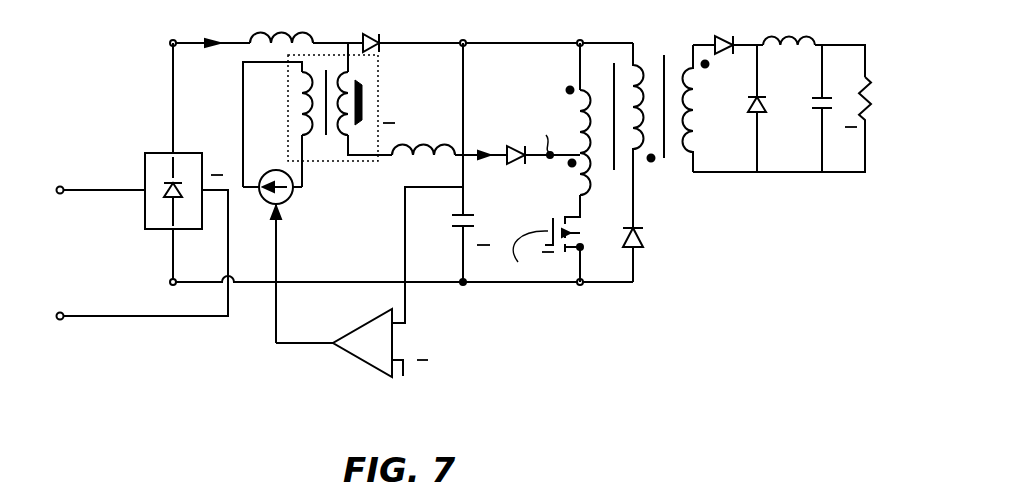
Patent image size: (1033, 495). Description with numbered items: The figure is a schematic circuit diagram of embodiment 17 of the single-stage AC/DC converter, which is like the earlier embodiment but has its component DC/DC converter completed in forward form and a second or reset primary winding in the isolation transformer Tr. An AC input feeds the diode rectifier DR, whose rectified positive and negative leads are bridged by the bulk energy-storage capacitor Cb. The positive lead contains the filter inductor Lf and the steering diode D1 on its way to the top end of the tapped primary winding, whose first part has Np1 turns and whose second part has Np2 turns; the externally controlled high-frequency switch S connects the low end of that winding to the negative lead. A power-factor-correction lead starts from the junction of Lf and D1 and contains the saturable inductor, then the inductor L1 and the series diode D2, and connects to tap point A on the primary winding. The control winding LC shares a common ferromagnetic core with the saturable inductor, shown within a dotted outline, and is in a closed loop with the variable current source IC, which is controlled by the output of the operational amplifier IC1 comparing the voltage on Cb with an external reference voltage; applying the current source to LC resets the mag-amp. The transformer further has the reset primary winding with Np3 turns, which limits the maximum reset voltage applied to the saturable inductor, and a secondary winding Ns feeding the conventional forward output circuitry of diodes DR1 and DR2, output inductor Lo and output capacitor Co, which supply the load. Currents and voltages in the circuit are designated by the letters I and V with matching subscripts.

The embodiment 17 is at (144, 106).
The diode rectifier DR is at (172, 179).
The filter inductor Lf is at (281, 21).
The steering diode D1 is at (376, 29).
The control winding LC is at (317, 115).
The current source IC is at (279, 256).
The inductor L1 is at (423, 164).
The series diode D2 is at (515, 143).
The bulk capacitor Cb is at (448, 231).
The operational amplifier IC1 is at (339, 343).
The isolation transformer Tr is at (625, 127).
The first part of primary winding Np1 is at (562, 120).
The second part of primary winding Np2 is at (559, 174).
The reset primary winding Np3 is at (656, 135).
The secondary winding Ns is at (703, 108).
The high-frequency switch S is at (569, 238).
The output rectifier diode DR1 is at (724, 31).
The output freewheeling diode DR2 is at (774, 108).
The output inductor Lo is at (789, 25).
The output capacitor Co is at (811, 108).